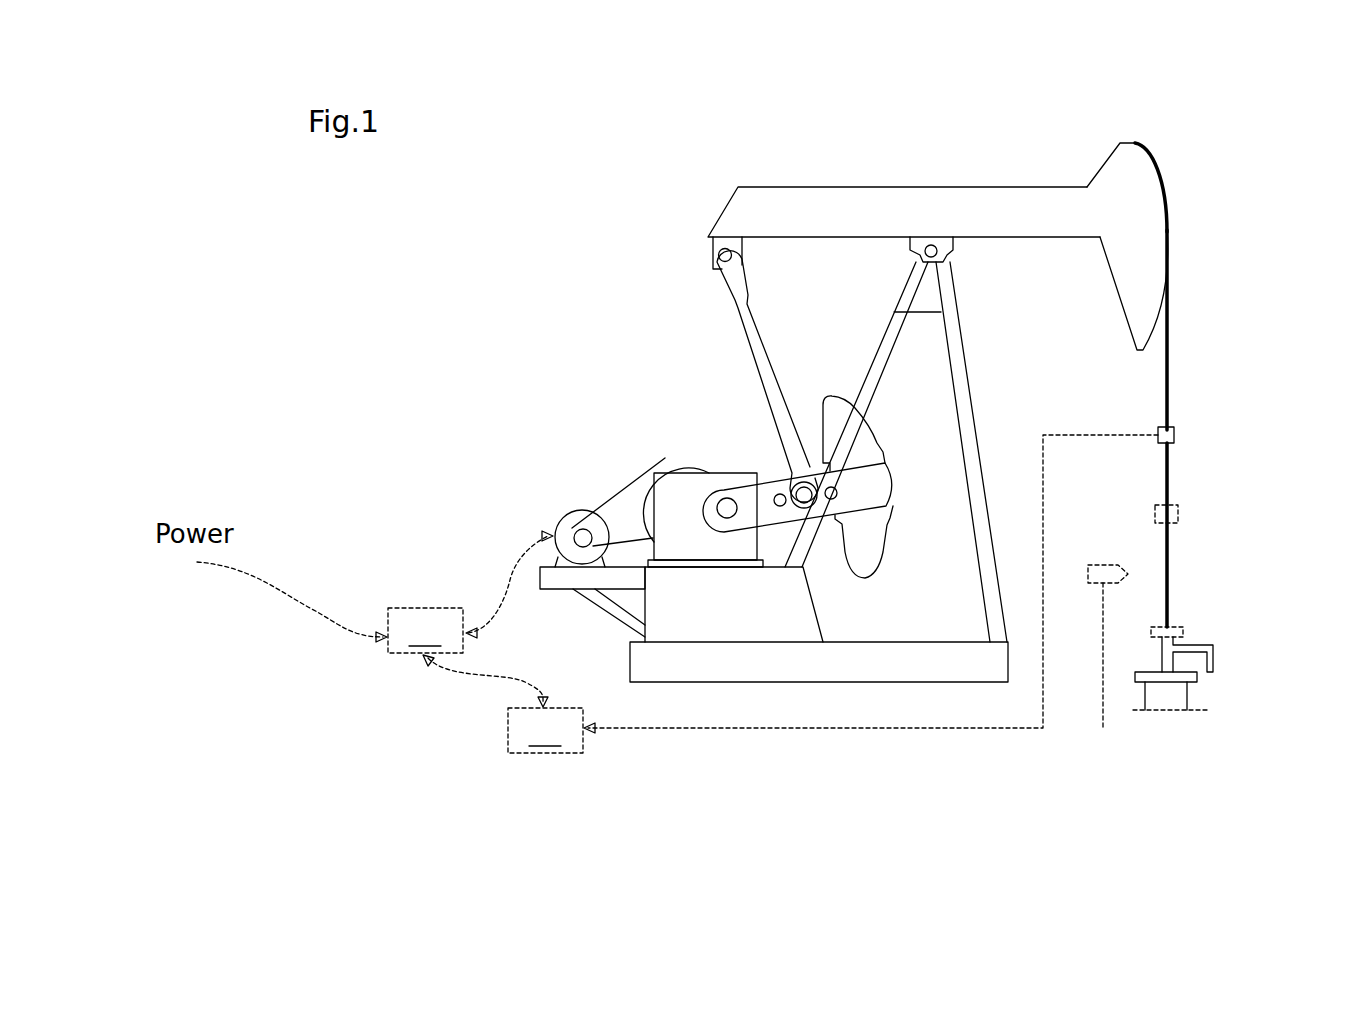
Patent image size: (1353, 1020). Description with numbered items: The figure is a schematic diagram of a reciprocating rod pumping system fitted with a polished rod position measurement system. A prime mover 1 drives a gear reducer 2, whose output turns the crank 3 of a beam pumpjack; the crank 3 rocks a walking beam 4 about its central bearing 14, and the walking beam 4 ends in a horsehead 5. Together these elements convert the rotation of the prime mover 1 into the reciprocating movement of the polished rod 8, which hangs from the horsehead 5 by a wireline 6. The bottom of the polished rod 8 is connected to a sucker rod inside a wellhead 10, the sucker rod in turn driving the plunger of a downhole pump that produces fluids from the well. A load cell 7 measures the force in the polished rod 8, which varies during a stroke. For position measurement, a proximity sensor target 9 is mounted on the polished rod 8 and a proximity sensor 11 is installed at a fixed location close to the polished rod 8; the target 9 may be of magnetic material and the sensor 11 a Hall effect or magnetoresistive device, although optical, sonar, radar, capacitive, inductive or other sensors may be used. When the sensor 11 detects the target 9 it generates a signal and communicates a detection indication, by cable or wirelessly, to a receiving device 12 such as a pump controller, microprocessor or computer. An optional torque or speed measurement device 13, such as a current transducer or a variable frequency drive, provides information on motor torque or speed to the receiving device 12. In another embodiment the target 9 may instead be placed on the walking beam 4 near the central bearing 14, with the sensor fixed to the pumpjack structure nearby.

The prime mover 1 is at (570, 520).
The gear reducer 2 is at (717, 480).
The crank 3 is at (783, 513).
The walking beam 4 is at (887, 202).
The horsehead 5 is at (1140, 197).
The wireline 6 is at (1168, 347).
The load cell 7 is at (1158, 432).
The polished rod 8 is at (1169, 478).
The proximity sensor target 9 is at (1178, 515).
The wellhead 10 is at (1190, 695).
The proximity sensor 11 is at (1112, 570).
The receiving device 12 is at (545, 730).
The torque or speed measurement device 13 is at (425, 630).
The central bearing 14 is at (953, 253).